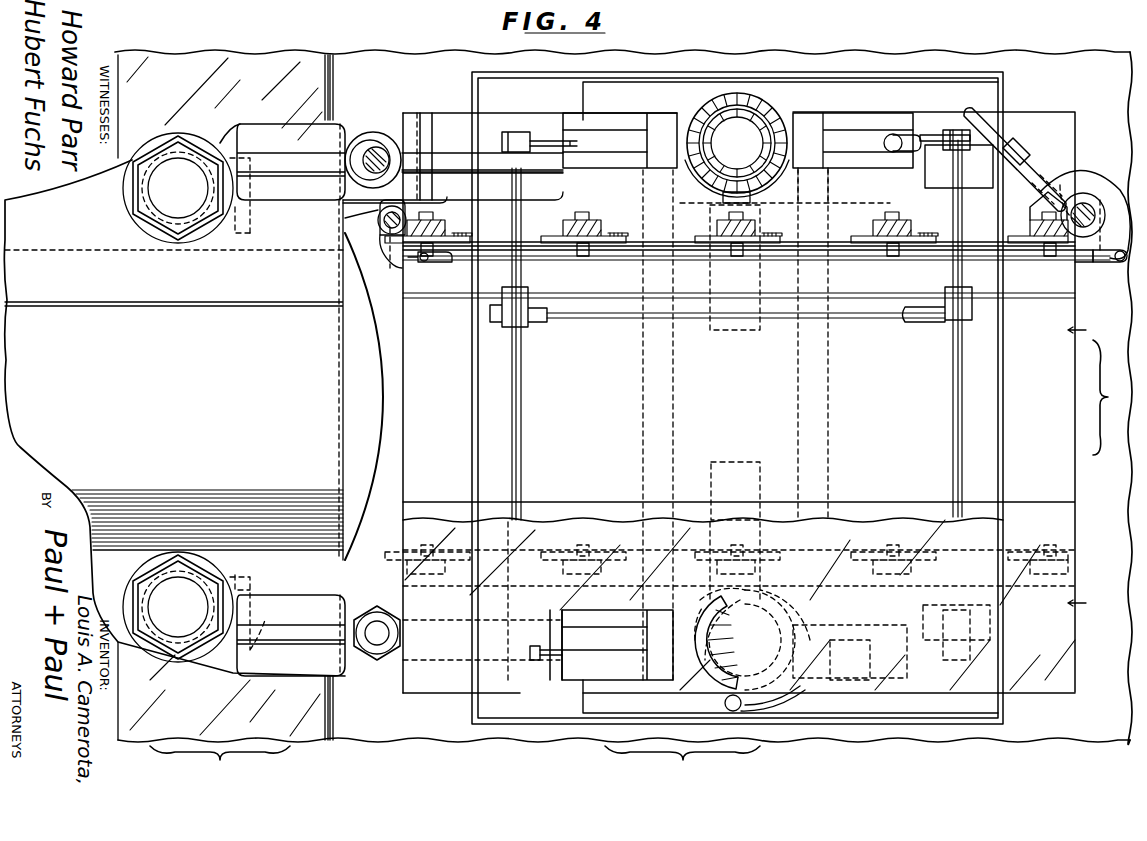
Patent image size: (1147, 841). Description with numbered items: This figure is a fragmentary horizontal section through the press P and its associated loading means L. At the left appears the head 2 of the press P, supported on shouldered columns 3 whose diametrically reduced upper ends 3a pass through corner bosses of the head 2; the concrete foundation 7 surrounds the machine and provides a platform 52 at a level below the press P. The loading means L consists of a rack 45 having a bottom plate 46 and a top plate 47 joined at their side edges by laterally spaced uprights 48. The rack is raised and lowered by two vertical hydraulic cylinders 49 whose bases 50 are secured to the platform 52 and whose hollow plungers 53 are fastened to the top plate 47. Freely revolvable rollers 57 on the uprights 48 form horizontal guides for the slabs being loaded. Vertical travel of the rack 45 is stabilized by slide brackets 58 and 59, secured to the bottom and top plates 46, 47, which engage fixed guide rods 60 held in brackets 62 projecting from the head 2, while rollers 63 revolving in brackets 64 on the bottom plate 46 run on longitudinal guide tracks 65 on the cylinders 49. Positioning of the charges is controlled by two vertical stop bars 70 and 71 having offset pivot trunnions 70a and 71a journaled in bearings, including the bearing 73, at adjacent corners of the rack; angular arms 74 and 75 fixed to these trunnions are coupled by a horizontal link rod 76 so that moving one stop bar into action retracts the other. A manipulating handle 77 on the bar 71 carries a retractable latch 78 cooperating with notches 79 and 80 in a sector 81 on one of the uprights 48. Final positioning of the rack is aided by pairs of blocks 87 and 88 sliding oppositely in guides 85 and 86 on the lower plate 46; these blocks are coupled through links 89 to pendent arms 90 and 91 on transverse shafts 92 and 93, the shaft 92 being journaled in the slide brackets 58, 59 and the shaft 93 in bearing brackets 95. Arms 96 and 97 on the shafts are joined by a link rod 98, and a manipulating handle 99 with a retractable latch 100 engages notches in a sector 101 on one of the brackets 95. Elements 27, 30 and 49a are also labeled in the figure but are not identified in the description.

The head 2 is at (174, 400).
The shouldered columns 3 is at (172, 142).
The upper ends of columns 3a is at (178, 397).
The concrete foundation 7 is at (225, 397).
The pin 27 is at (252, 228).
The slot 30 is at (256, 160).
The rack 45 is at (1120, 405).
The bottom plate 46 is at (1110, 339).
The top plate 47 is at (1110, 612).
The uprights 48 is at (1105, 566).
The vertical hydraulic cylinders 49 is at (742, 118).
The roller 49a is at (760, 697).
The bases of cylinders 50 is at (708, 88).
The platform 52 is at (408, 58).
The hollow plungers 53 is at (700, 690).
The rollers 57 is at (428, 257).
The slide bracket 58 is at (426, 113).
The slide bracket 59 is at (374, 680).
The guide rods 60 is at (384, 148).
The bracket 62 is at (300, 140).
The rollers 63 is at (700, 218).
The brackets 64 is at (736, 330).
The longitudinal guide tracks 65 is at (700, 175).
The stop bar 70 is at (394, 268).
The pivot trunnion 70a is at (345, 217).
The stop bar 71 is at (1092, 262).
The pivot trunnion 71a is at (1090, 195).
The bearing 73 is at (425, 200).
The angular arm 74 is at (390, 250).
The angular arm 75 is at (1122, 262).
The horizontal link rod 76 is at (857, 258).
The manipulating handle 77 is at (968, 108).
The retractable latch 78 is at (1028, 158).
The notch 79 is at (1035, 200).
The notch 80 is at (1113, 190).
The sector 81 is at (1083, 203).
The guide 85 is at (636, 124).
The guide 86 is at (842, 121).
The blocks 87 is at (603, 140).
The blocks 88 is at (865, 130).
The links 89 is at (552, 140).
The pendent arm 90 is at (503, 137).
The pendent arm 91 is at (972, 652).
The transverse shaft 92 is at (511, 397).
The transverse shaft 93 is at (963, 393).
The bearing brackets 95 is at (970, 182).
The pendent arm 96 is at (490, 324).
The upwardly projecting arm 97 is at (965, 322).
The link rod 98 is at (663, 320).
The manipulating handle 99 is at (900, 135).
The retractable latch 100 is at (930, 163).
The sector 101 is at (955, 182).
The press P is at (220, 764).
The loading means L is at (682, 764).